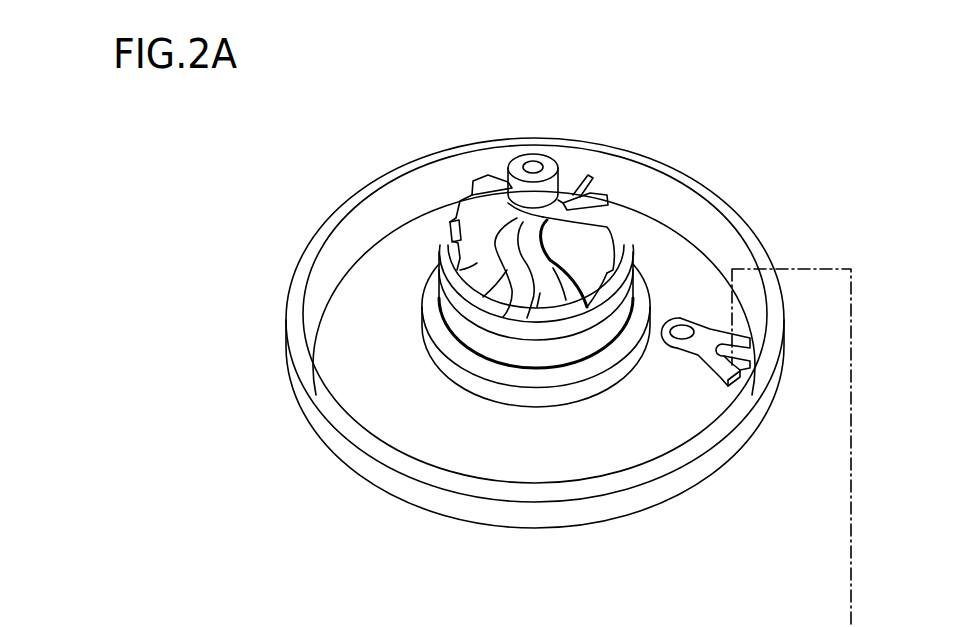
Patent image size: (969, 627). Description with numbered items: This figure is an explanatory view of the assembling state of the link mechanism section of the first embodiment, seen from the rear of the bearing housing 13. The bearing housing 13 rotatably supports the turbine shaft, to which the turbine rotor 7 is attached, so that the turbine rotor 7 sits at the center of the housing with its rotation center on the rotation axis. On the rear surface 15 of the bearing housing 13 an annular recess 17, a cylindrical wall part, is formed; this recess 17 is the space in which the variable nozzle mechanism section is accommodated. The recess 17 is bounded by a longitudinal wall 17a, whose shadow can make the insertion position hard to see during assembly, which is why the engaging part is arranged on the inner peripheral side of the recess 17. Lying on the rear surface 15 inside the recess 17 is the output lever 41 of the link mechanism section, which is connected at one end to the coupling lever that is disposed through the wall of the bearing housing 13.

The turbine rotor 7 is at (500, 183).
The bearing housing 13 is at (403, 151).
The rear surface 15 is at (362, 313).
The annular recess 17 is at (322, 442).
The longitudinal wall 17a is at (335, 257).
The output lever 41 is at (732, 333).